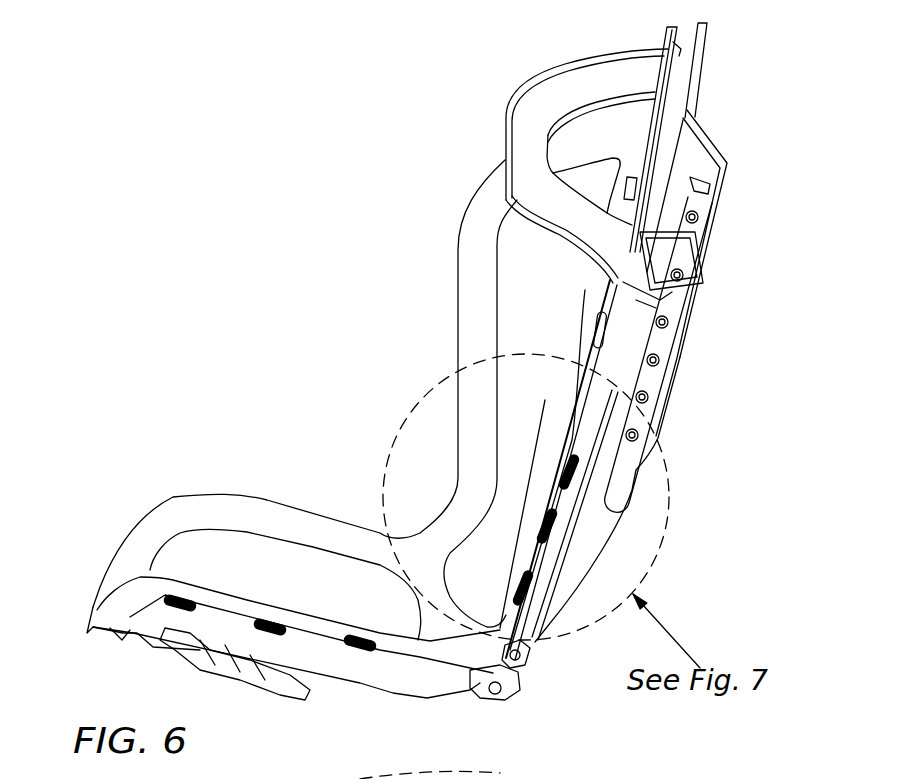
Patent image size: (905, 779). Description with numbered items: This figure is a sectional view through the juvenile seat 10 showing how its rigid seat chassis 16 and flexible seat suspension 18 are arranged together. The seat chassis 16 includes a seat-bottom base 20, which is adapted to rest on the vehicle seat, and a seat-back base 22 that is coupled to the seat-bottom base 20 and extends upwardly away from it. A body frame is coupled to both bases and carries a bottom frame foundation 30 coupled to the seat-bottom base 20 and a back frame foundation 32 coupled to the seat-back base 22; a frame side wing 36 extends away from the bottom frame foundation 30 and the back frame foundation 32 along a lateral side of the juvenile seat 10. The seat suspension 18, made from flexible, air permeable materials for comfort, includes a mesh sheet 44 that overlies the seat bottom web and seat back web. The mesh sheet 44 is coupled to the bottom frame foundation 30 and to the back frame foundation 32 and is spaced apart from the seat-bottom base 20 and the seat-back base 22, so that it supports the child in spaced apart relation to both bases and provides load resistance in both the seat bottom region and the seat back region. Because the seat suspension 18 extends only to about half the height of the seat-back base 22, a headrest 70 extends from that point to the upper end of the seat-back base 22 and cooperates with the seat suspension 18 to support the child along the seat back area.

The juvenile seat 10 is at (128, 98).
The seat chassis 16 is at (760, 147).
The seat suspension 18 is at (500, 421).
The seat-bottom base 20 is at (313, 720).
The seat-back base 22 is at (720, 360).
The bottom frame foundation 30 is at (243, 540).
The back frame foundation 32 is at (568, 283).
The frame side wing 36 is at (430, 227).
The mesh sheet 44 is at (500, 480).
The headrest 70 is at (549, 62).